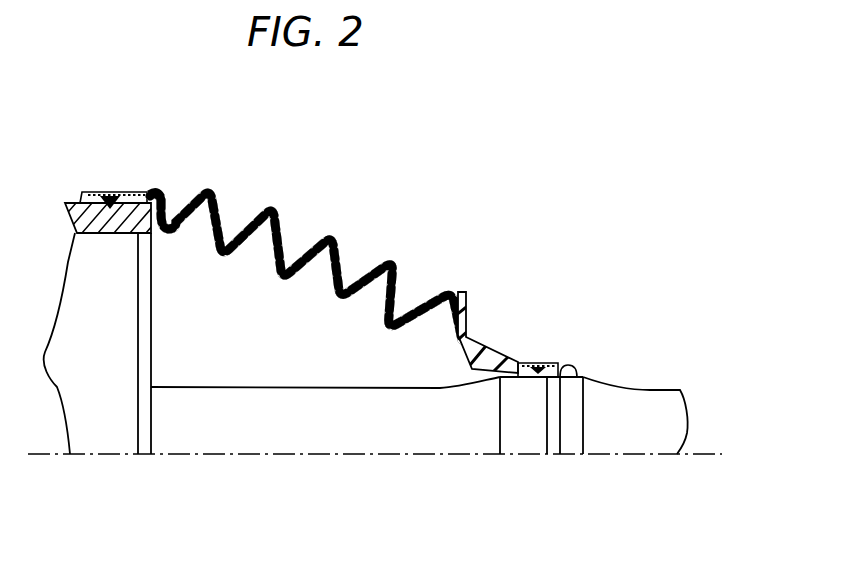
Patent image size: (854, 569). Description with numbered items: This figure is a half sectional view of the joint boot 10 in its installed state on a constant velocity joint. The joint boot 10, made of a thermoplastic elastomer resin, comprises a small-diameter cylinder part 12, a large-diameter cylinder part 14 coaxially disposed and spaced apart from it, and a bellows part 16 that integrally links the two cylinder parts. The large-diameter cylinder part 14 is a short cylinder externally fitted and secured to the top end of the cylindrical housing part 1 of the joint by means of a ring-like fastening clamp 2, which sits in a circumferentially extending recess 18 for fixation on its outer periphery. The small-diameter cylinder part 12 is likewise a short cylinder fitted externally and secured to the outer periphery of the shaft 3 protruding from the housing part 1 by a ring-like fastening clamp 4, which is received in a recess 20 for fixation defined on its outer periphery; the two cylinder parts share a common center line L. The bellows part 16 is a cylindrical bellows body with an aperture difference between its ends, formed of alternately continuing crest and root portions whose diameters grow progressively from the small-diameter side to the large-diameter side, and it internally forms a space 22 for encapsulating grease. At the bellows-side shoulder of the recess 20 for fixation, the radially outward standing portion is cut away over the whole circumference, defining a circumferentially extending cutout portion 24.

The cylindrical housing part 1 is at (76, 216).
The fastening clamp 2 is at (110, 192).
The shaft 3 is at (307, 442).
The fastening clamp 4 is at (555, 363).
The joint boot 10 is at (291, 211).
The small-diameter cylinder part 12 is at (573, 367).
The large-diameter cylinder part 14 is at (82, 192).
The bellows part 16 is at (340, 228).
The recess for fixation 18 is at (127, 192).
The recess for fixation 20 is at (537, 362).
The space for encapsulating grease 22 is at (358, 315).
The cutout portion 24 is at (512, 360).
The center line L is at (703, 457).